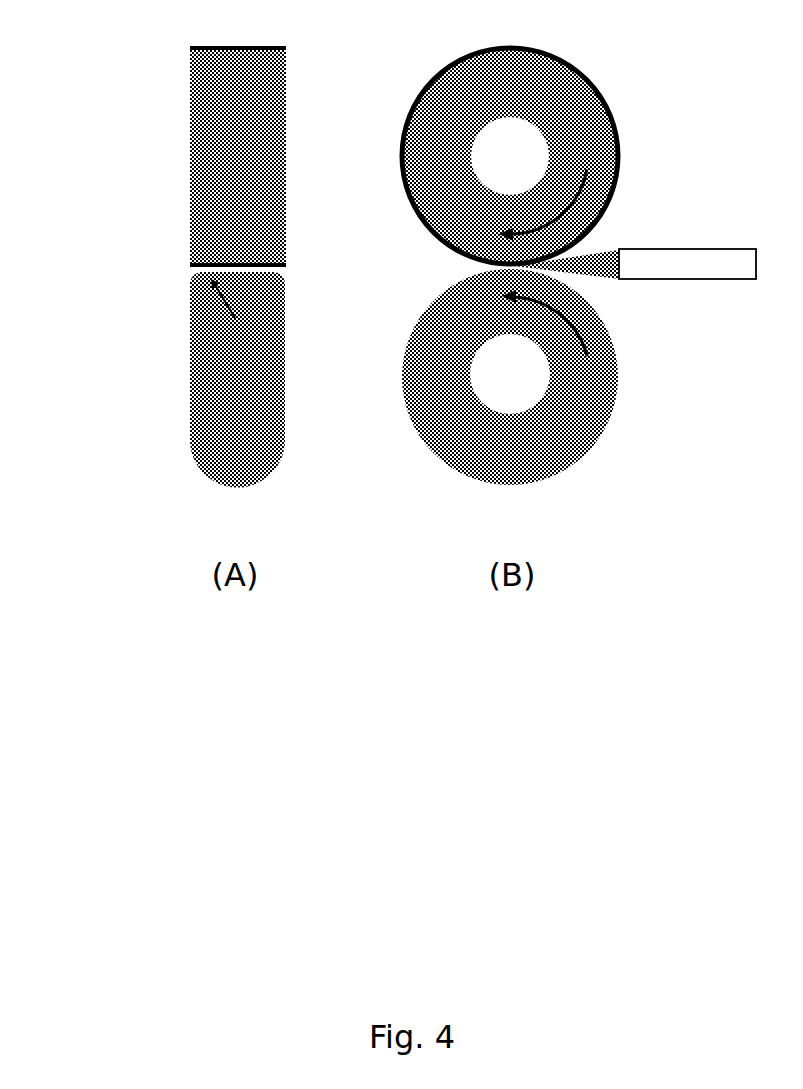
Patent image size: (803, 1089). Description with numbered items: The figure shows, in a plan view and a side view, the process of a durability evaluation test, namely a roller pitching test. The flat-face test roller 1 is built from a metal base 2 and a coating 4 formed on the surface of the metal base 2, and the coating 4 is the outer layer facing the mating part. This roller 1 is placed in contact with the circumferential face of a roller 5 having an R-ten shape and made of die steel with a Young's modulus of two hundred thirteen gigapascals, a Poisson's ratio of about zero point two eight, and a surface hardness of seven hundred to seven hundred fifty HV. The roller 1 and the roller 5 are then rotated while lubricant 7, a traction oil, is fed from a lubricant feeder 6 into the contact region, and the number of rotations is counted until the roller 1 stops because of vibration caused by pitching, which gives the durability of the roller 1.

The roller 1 is at (397, 150).
The metal base 2 is at (192, 91).
The coating 4 is at (192, 51).
The roller 5 is at (190, 346).
The lubricant feeder 6 is at (673, 249).
The lubricant 7 is at (606, 253).